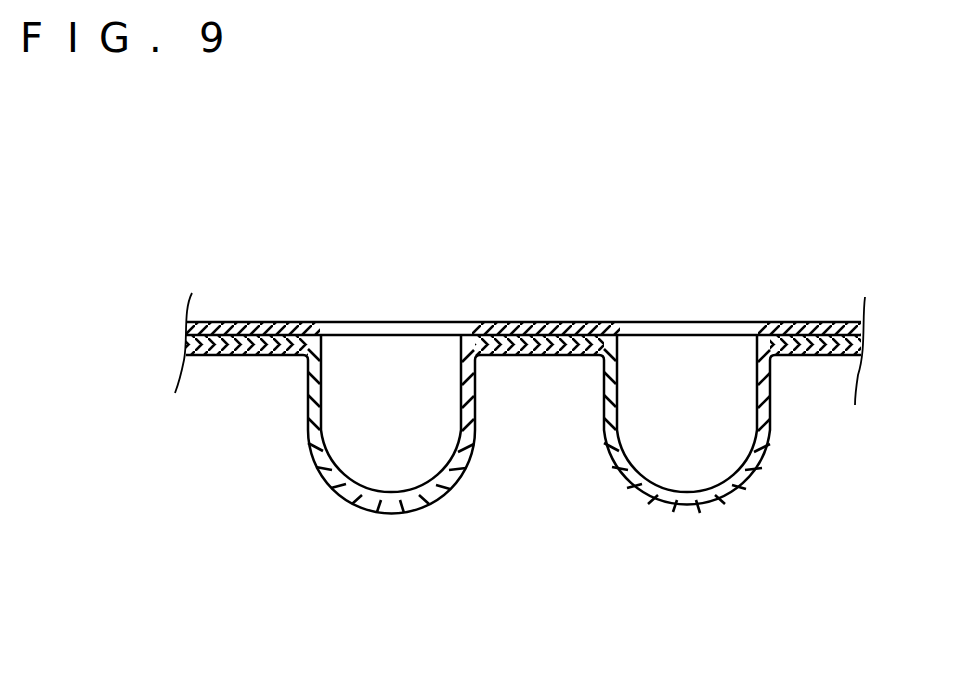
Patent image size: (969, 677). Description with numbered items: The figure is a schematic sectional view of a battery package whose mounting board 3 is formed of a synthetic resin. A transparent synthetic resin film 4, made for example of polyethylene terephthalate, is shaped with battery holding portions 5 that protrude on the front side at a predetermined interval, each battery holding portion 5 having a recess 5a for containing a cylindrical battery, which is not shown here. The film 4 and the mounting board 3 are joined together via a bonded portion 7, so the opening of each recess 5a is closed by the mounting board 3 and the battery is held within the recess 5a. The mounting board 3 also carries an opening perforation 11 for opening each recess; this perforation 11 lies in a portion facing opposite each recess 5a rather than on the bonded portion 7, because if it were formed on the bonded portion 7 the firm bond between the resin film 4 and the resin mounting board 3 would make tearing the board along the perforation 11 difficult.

The mounting board 3 is at (823, 323).
The transparent synthetic resin film 4 is at (793, 355).
The battery holding portion 5 is at (357, 500).
The recess 5a is at (661, 468).
The bonded portion 7 is at (233, 355).
The opening perforation 11 is at (328, 325).